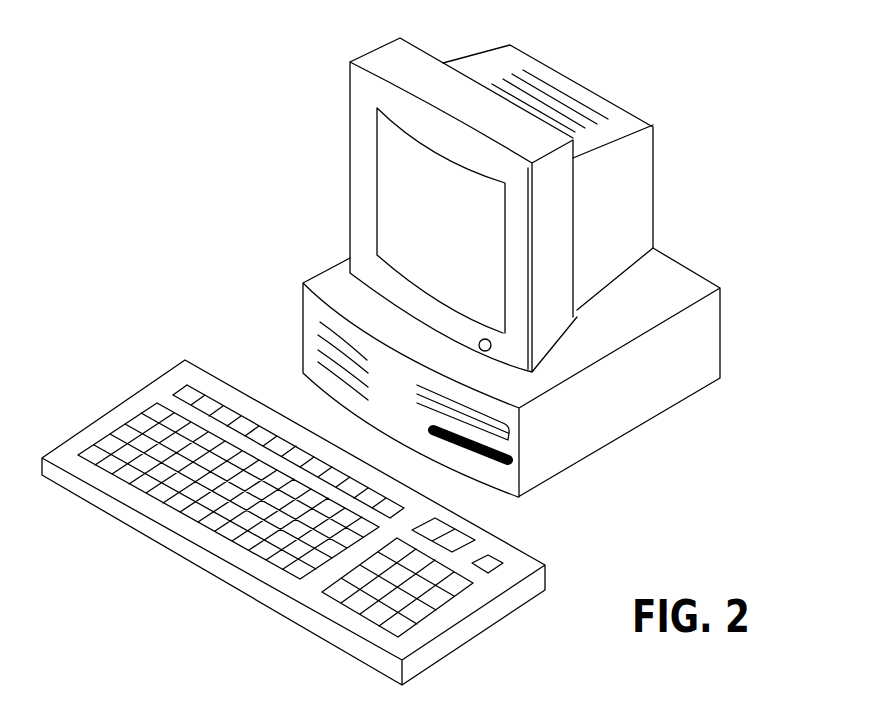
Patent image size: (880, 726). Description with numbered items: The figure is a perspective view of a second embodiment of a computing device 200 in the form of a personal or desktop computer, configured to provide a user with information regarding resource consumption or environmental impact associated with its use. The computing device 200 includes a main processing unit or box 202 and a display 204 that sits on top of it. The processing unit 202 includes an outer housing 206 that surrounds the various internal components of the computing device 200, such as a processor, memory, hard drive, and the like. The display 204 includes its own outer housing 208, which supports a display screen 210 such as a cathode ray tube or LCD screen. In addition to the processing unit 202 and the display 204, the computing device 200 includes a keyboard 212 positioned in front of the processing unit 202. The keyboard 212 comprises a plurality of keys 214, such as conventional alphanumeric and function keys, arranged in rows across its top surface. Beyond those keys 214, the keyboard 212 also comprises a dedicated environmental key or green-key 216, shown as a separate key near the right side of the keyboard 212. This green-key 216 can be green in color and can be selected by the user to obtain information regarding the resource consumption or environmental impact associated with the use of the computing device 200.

The computing device 200 is at (137, 159).
The main processing unit 202 is at (274, 317).
The display 204 is at (316, 142).
The outer housing 206 is at (675, 283).
The outer housing 208 is at (633, 203).
The display screen 210 is at (460, 235).
The keyboard 212 is at (64, 400).
The keys 214 is at (257, 548).
The green-key 216 is at (492, 560).